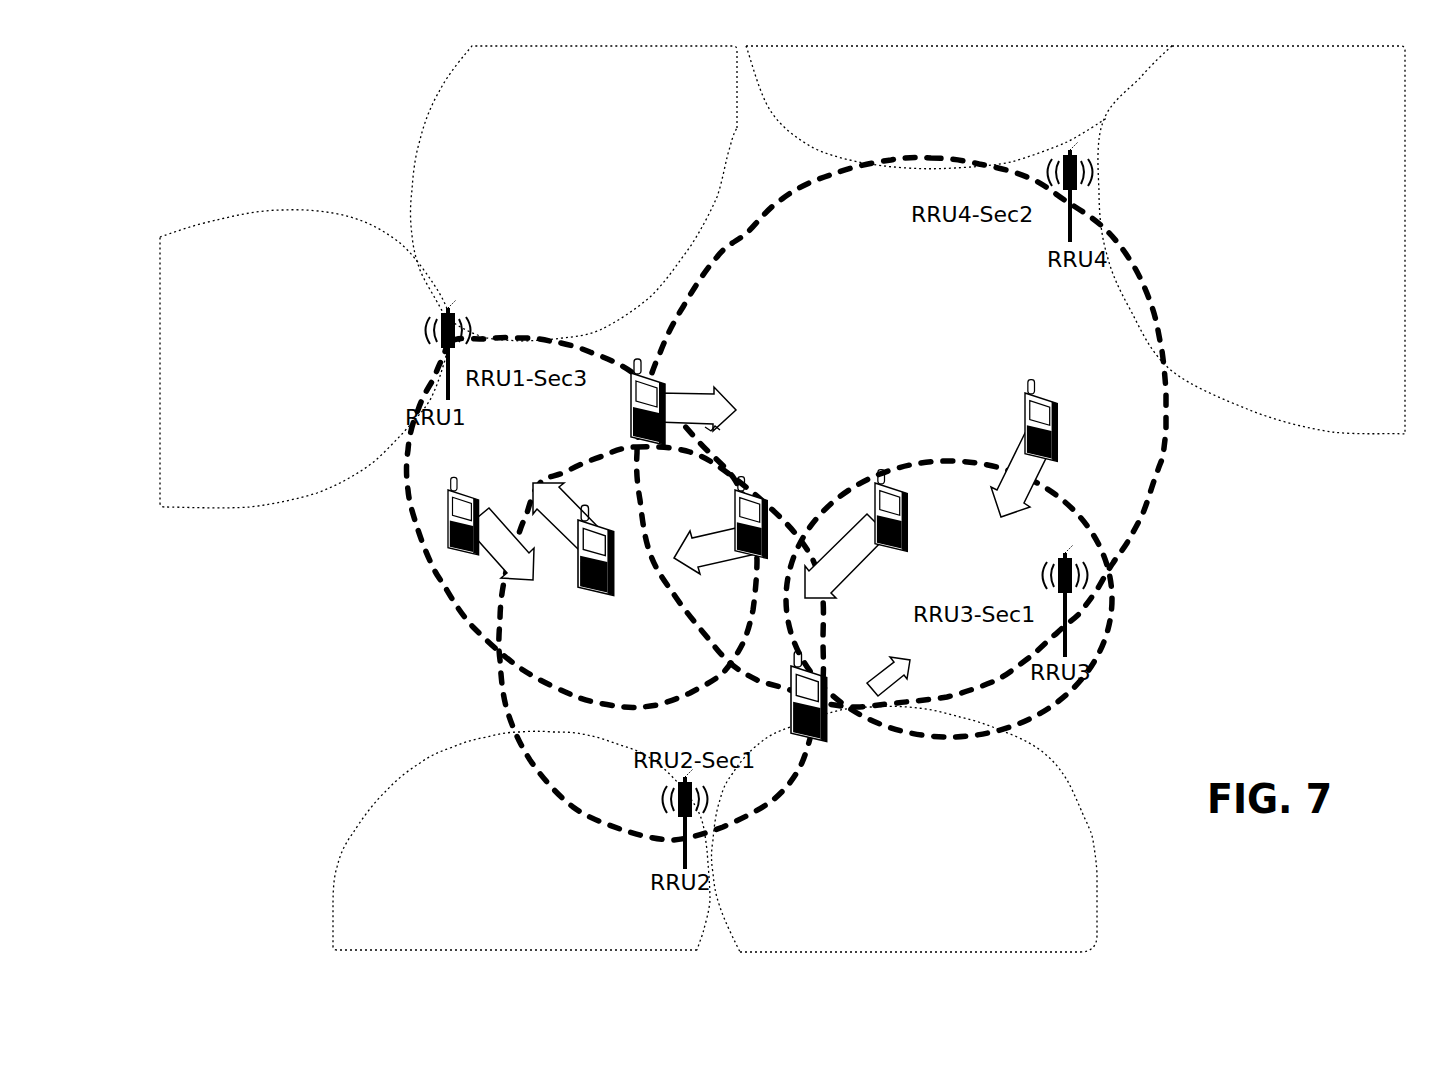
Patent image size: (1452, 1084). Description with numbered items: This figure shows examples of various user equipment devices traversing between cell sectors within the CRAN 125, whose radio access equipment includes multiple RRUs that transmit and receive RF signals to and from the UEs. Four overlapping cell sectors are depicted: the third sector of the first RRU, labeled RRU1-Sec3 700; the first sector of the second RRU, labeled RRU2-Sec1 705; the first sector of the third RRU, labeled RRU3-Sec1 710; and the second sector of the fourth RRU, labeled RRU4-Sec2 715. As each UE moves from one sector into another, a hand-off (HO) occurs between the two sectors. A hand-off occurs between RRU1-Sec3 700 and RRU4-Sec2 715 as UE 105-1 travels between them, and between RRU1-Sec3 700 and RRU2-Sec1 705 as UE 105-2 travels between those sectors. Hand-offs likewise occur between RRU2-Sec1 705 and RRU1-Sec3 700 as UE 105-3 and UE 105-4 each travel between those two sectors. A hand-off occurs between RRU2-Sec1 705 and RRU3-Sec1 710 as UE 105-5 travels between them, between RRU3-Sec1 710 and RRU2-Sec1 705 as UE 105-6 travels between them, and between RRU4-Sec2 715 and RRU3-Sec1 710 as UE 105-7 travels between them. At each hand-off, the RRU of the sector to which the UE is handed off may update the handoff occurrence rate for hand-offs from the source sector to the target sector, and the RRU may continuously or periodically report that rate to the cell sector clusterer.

The CRAN 125 is at (257, 134).
The RRU1 sector 3 (RRU1-Sec3) 700 is at (440, 590).
The RRU2 sector 1 (RRU2-Sec1) 705 is at (504, 713).
The RRU3 sector 1 (RRU3-Sec1) 710 is at (1060, 712).
The RRU4 sector 2 (RRU4-Sec2) 715 is at (790, 192).
The UE 105-1 is at (690, 380).
The UE 105-2 is at (510, 496).
The UE 105-3 is at (623, 528).
The UE 105-4 is at (775, 495).
The UE 105-5 is at (831, 748).
The UE 105-6 is at (928, 481).
The UE 105-7 is at (1066, 395).